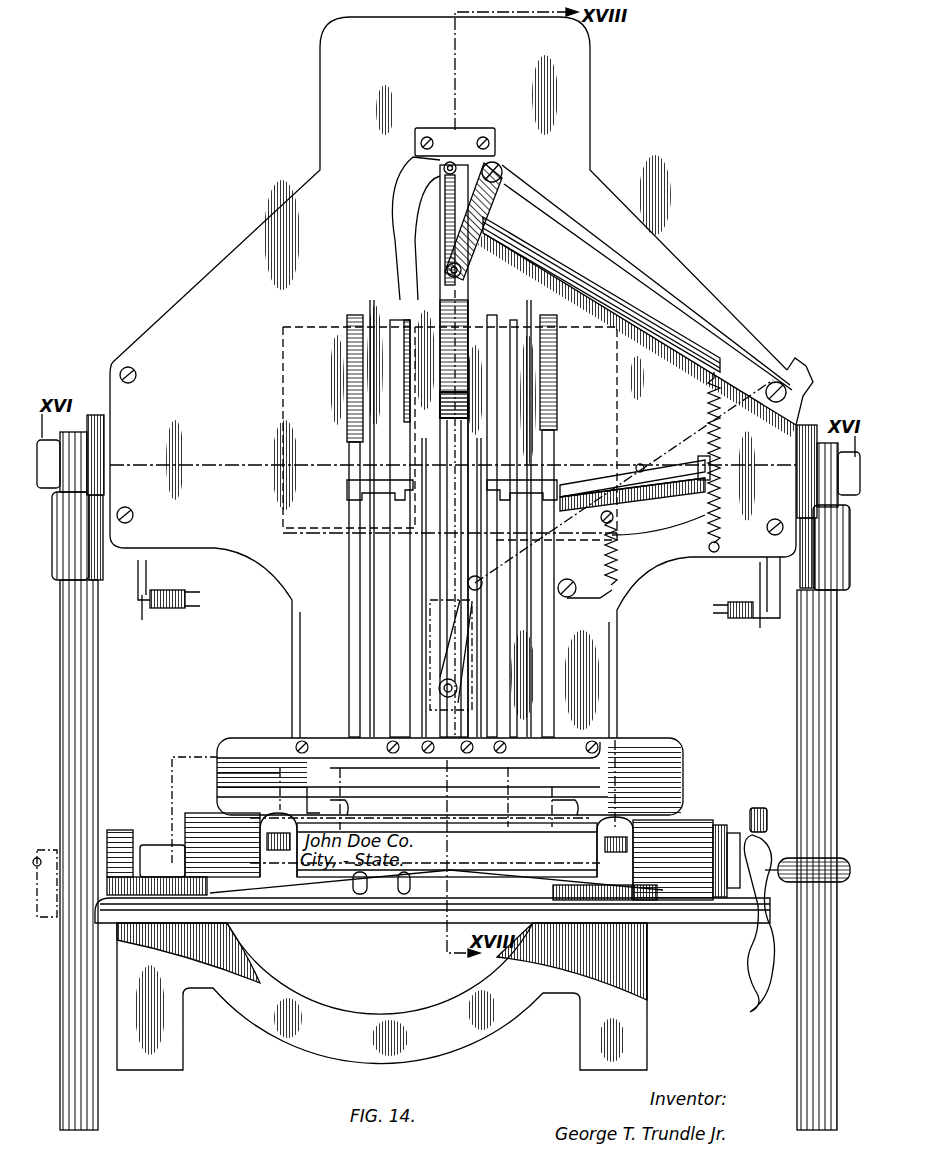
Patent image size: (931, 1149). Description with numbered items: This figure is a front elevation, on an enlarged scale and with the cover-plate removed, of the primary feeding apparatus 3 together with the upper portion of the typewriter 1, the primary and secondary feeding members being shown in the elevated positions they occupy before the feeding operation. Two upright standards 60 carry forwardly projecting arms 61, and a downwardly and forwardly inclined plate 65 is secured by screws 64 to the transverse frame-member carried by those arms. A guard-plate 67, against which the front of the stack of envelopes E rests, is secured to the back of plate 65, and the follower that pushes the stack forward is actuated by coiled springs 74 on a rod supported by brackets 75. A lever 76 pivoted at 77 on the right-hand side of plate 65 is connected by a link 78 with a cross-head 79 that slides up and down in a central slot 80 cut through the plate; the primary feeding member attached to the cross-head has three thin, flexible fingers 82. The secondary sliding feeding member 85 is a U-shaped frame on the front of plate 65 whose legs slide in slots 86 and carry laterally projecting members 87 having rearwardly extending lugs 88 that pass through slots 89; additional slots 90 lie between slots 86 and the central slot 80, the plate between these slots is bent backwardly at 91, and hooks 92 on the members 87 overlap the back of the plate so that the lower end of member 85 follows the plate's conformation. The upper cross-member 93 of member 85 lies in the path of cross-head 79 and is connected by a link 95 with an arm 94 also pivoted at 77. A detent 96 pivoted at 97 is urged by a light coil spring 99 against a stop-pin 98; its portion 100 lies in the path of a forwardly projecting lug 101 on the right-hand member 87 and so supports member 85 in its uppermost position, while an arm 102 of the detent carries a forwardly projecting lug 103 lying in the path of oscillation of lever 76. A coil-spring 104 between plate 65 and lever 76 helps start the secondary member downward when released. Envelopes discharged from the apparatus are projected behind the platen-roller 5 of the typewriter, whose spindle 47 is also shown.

The typewriter 1 is at (512, 1015).
The primary feeding apparatus 3 is at (461, 377).
The platen-roller 5 is at (698, 827).
The spindle 47 is at (775, 832).
The upright standards 60 is at (98, 722).
The forwardly projecting arms 61 is at (96, 414).
The screws 64 is at (128, 366).
The inclined plate 65 is at (232, 548).
The guard-plate 67 is at (356, 314).
The coiled springs 74 is at (168, 610).
The brackets 75 is at (142, 622).
The lever 76 is at (668, 322).
The pivot 77 is at (780, 380).
The link 78 is at (441, 236).
The cross-head 79 is at (436, 260).
The slot 80 is at (442, 430).
The fingers 82 is at (340, 803).
The secondary sliding feeding member 85 is at (406, 178).
The slots 86 is at (392, 565).
The laterally projecting members 87 is at (406, 464).
The rearwardly extending lugs 88 is at (345, 515).
The slots 89 is at (349, 590).
The additional slots 90 is at (352, 700).
The bent-back portion 91 is at (340, 535).
The hooks 92 is at (358, 470).
The upper cross-member 93 is at (425, 165).
The arm 94 is at (446, 202).
The link 95 is at (556, 272).
The detent 96 is at (614, 515).
The pivot 97 is at (603, 592).
The stop-pin 98 is at (648, 463).
The light coil spring 99 is at (645, 534).
The portion of the detent 100 is at (572, 488).
The forwardly projecting lug 101 is at (528, 470).
The arm of the detent 102 is at (690, 486).
The forwardly projecting lug 103 is at (700, 462).
The coil-spring 104 is at (730, 470).
The envelopes E is at (612, 795).